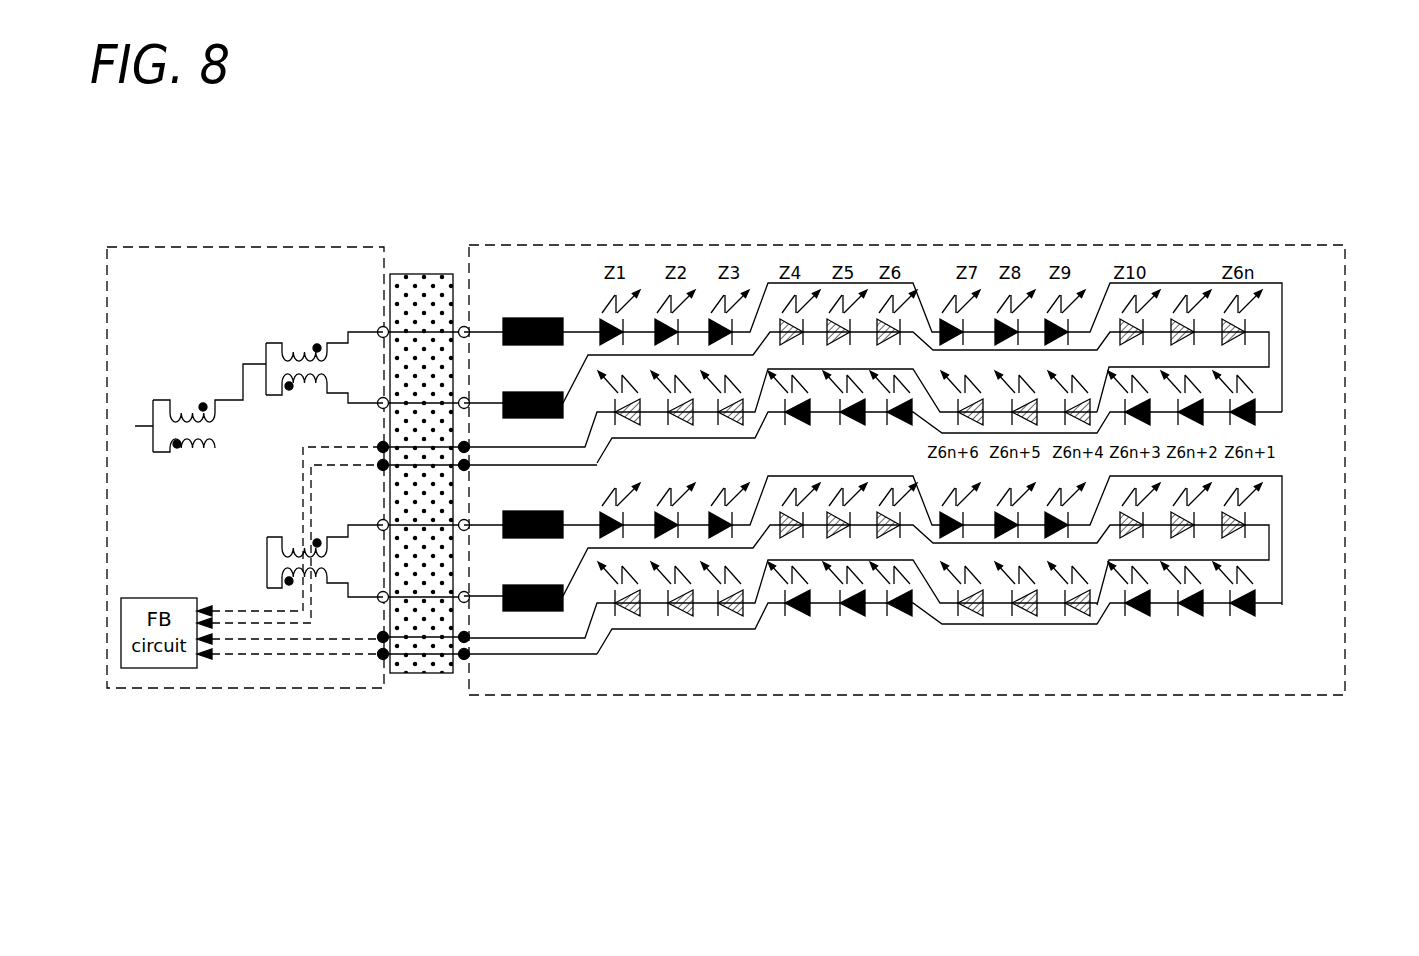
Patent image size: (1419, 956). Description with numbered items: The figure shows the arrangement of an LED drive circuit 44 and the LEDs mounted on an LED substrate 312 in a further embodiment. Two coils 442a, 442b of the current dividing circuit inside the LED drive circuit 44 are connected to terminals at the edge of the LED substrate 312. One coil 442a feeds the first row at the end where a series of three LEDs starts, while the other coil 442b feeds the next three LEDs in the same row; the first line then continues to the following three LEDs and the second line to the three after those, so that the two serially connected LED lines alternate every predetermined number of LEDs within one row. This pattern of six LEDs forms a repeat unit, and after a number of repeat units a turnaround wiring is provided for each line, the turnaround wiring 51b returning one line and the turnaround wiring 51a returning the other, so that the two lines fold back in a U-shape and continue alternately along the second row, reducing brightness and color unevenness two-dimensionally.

The LED drive circuit 44 is at (218, 246).
The LED substrate 312 is at (606, 246).
The coil 442a is at (290, 346).
The coil 442b is at (305, 388).
The turnaround wiring 51a is at (1285, 388).
The turnaround wiring 51b is at (1272, 335).